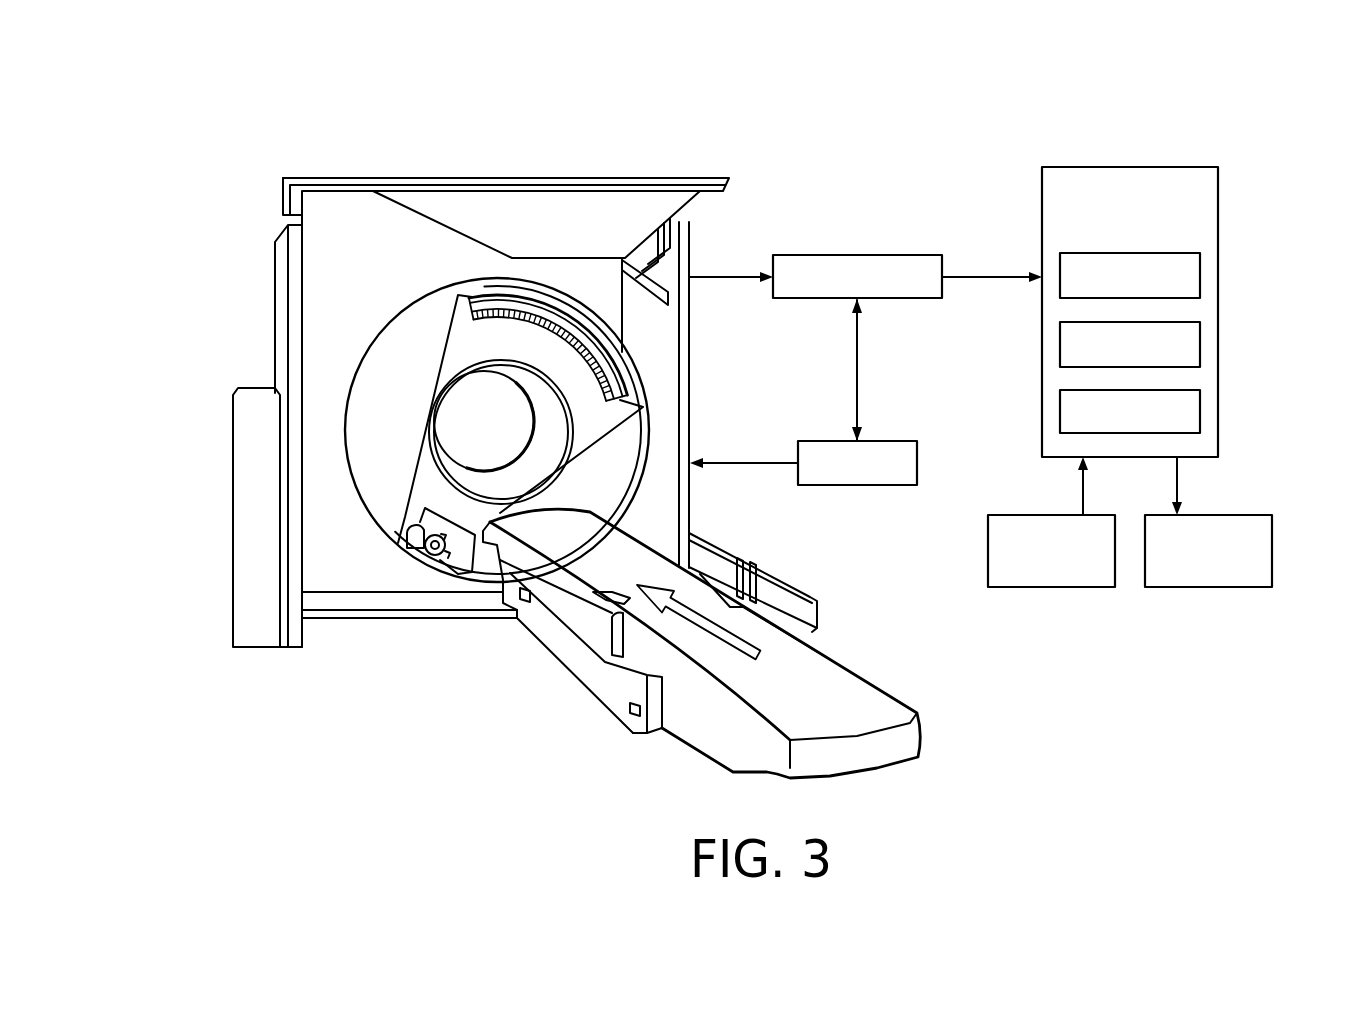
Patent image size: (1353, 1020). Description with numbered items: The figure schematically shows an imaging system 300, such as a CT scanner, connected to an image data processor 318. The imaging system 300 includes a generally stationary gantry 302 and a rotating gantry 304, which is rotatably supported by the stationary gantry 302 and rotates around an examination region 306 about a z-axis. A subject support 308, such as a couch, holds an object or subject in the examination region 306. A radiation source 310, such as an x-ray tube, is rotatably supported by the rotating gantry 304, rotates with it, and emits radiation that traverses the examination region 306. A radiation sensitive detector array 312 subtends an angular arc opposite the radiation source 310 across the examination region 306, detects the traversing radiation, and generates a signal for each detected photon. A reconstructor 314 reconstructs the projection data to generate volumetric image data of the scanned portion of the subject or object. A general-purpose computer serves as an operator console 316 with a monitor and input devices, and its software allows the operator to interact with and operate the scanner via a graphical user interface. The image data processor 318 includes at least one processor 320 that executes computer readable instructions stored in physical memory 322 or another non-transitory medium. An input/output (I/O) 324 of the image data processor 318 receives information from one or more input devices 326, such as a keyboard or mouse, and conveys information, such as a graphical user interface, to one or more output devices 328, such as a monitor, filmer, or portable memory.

The imaging system 300 is at (726, 425).
The stationary gantry 302 is at (282, 303).
The rotating gantry 304 is at (467, 338).
The examination region 306 is at (462, 433).
The subject support 308 is at (857, 710).
The radiation source 310 is at (430, 556).
The radiation sensitive detector array 312 is at (484, 298).
The reconstructor 314 is at (902, 253).
The operator console 316 is at (882, 486).
The image data processor 318 is at (1179, 264).
The processor 320 is at (1200, 345).
The memory 322 is at (1200, 412).
The input/output (I/O) 324 is at (1200, 277).
The input devices 326 is at (1048, 587).
The output devices 328 is at (1205, 587).